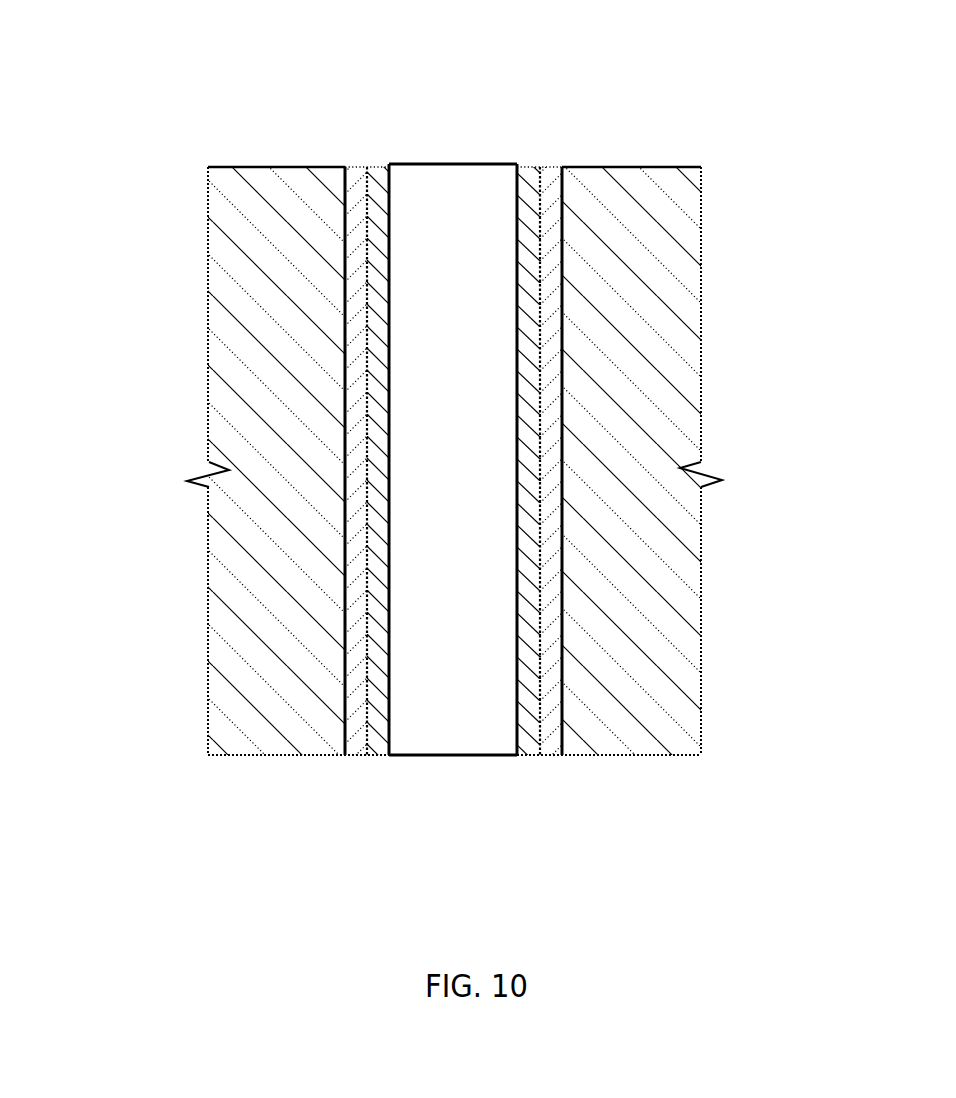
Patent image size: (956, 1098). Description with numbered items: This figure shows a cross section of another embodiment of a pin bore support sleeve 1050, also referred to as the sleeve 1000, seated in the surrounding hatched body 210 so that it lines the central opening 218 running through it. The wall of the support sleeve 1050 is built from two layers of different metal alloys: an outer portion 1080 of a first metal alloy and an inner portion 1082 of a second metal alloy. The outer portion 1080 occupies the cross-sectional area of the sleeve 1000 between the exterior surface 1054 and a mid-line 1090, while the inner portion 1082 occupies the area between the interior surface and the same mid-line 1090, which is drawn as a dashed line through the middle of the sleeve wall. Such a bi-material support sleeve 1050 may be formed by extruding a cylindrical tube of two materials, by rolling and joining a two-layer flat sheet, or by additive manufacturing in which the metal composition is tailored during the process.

The substrate 210 is at (240, 317).
The opening 218 is at (420, 730).
The sleeve 1000 is at (434, 448).
The pin bore support sleeve 1050 is at (547, 398).
The exterior surface 1054 is at (343, 430).
The outer portion 1080 is at (353, 222).
The inner portion 1082 is at (389, 186).
The mid-line 1090 is at (367, 168).